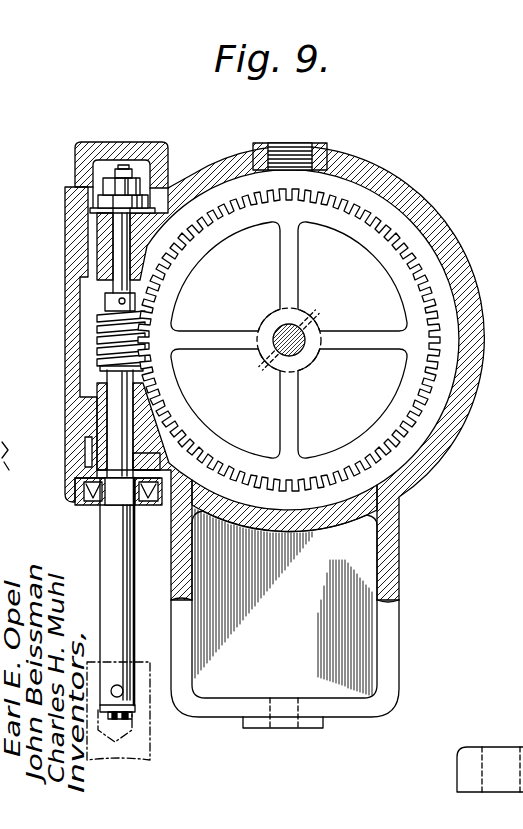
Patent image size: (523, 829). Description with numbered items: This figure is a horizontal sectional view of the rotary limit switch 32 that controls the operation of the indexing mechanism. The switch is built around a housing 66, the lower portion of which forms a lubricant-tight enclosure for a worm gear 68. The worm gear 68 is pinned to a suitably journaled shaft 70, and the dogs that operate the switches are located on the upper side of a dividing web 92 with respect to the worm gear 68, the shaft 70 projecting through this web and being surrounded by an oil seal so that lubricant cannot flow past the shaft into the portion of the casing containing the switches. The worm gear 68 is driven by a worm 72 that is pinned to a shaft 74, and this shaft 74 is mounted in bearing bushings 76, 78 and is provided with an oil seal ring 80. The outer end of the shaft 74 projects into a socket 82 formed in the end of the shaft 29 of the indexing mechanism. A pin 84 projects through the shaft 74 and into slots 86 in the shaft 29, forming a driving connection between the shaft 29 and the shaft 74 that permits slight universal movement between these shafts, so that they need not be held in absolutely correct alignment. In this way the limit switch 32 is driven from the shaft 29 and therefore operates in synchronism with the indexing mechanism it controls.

The rotary limit switch 32 is at (430, 172).
The worm gear 68 is at (423, 283).
The shaft 70 is at (302, 318).
The housing 66 is at (403, 498).
The dividing web 92 is at (490, 676).
The bearing bushing 76 is at (95, 248).
The worm 72 is at (95, 335).
The bearing bushing 78 is at (93, 424).
The oil seal ring 80 is at (64, 488).
The shaft 74 is at (110, 538).
The slots 86 is at (120, 683).
The pin 84 is at (128, 694).
The socket 82 is at (133, 727).
The shaft 29 is at (150, 745).